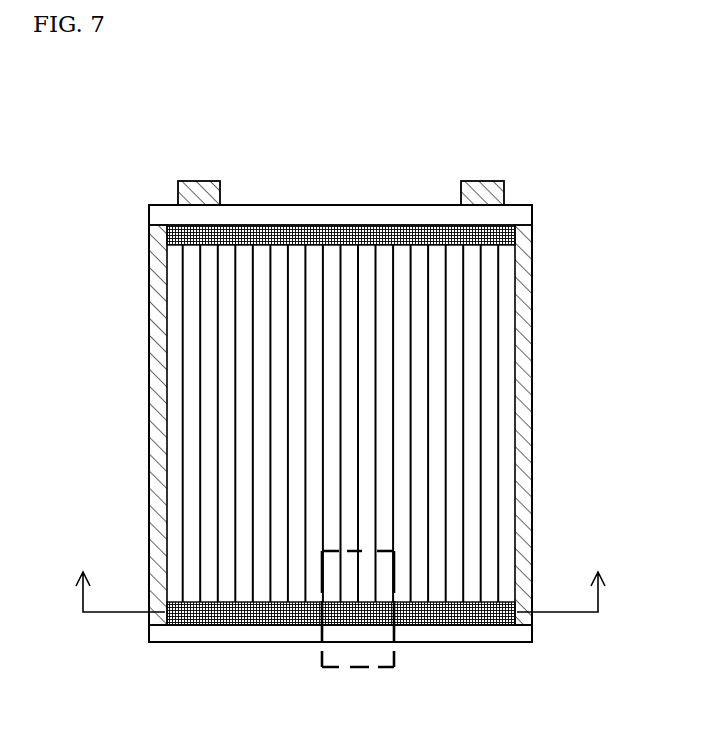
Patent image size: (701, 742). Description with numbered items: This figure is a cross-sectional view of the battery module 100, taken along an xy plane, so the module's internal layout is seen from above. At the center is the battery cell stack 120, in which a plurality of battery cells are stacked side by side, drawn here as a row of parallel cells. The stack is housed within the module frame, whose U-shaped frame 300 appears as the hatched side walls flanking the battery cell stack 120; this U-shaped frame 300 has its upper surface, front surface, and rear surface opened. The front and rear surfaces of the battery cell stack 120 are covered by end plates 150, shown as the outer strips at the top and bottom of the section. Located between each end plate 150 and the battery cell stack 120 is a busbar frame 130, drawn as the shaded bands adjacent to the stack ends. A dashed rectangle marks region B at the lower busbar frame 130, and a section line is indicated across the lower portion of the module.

The battery module 100 is at (110, 98).
The battery cell stack 120 is at (508, 343).
The busbar frame 130 is at (437, 626).
The end plate 150 is at (509, 635).
The U-shaped frame 300 is at (523, 438).
The enlarged region B is at (350, 668).